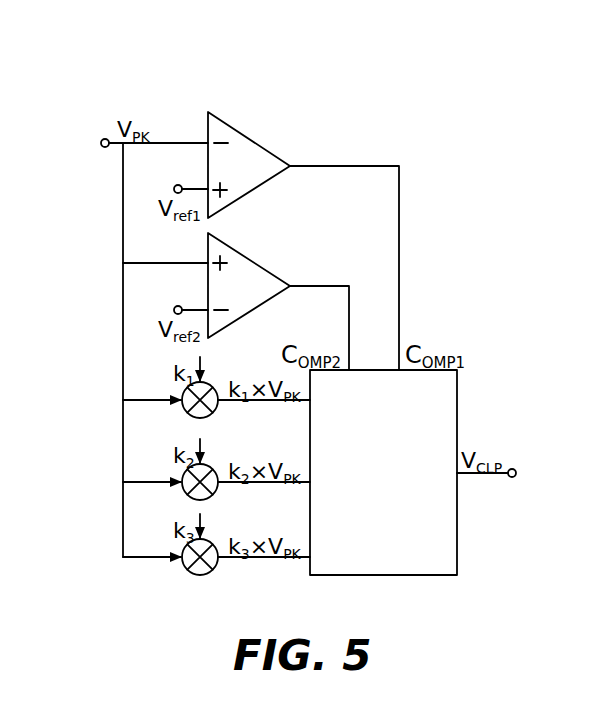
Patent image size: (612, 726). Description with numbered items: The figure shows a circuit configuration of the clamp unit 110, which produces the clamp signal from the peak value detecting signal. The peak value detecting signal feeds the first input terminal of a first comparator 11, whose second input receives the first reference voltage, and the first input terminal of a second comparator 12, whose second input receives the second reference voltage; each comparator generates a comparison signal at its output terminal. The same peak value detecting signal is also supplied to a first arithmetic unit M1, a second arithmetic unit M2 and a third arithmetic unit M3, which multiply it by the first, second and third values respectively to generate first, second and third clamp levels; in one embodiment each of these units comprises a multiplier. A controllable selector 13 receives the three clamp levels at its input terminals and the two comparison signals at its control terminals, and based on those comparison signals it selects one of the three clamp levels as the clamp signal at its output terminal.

The first comparator 11 is at (255, 179).
The second comparator 12 is at (255, 299).
The controllable selector 13 is at (383, 472).
The clamp unit 110 is at (418, 124).
The first arithmetic unit M1 is at (213, 413).
The second arithmetic unit M2 is at (213, 495).
The third arithmetic unit M3 is at (213, 570).